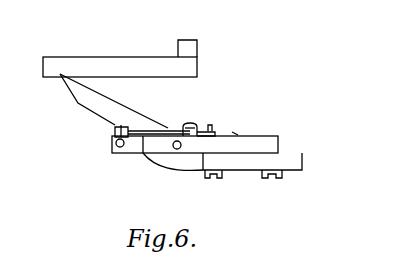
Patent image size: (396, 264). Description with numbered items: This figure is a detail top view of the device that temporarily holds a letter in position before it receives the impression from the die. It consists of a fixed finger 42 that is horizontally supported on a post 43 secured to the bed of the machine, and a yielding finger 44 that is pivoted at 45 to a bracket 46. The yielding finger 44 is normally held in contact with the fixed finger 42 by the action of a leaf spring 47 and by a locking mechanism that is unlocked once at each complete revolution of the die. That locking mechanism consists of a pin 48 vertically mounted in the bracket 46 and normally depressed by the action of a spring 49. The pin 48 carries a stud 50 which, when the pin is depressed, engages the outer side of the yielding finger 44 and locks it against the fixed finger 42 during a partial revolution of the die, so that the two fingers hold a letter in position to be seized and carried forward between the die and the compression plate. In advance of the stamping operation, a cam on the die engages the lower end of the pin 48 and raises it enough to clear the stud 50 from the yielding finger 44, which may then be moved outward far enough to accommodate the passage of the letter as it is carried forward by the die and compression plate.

The fixed finger 42 is at (120, 59).
The post 43 is at (194, 41).
The yielding finger 44 is at (114, 101).
The pivot 45 is at (186, 146).
The bracket 46 is at (207, 157).
The leaf spring 47 is at (173, 171).
The pin 48 is at (116, 146).
The spring 49 is at (169, 129).
The stud 50 is at (115, 131).